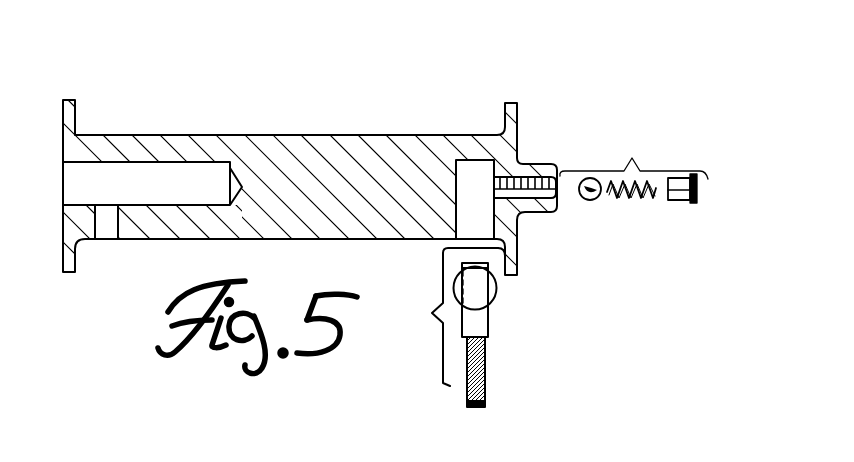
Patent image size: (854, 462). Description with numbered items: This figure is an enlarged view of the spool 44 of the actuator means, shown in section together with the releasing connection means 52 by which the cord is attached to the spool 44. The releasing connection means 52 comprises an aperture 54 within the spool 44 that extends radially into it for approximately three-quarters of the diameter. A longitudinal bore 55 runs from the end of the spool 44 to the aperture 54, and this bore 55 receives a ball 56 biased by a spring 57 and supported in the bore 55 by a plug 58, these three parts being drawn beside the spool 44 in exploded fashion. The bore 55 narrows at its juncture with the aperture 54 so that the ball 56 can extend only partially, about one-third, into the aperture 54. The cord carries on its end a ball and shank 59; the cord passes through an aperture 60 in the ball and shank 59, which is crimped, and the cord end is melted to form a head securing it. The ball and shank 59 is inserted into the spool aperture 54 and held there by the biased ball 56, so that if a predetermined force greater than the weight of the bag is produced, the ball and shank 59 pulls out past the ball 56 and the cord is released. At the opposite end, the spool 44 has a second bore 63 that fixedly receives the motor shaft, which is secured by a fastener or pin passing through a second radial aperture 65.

The spool 44 is at (333, 155).
The releasing connection means 52 is at (528, 267).
The aperture 54 is at (453, 159).
The longitudinal bore 55 is at (558, 184).
The ball 56 is at (590, 200).
The spring 57 is at (624, 199).
The plug 58 is at (680, 204).
The ball and shank 59 is at (481, 325).
The aperture 60 is at (493, 307).
The second bore 63 is at (194, 164).
The second radial aperture 65 is at (118, 236).